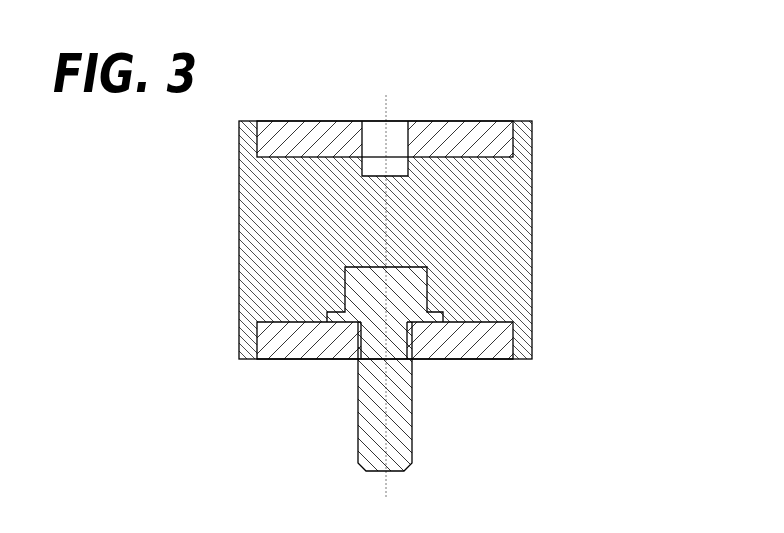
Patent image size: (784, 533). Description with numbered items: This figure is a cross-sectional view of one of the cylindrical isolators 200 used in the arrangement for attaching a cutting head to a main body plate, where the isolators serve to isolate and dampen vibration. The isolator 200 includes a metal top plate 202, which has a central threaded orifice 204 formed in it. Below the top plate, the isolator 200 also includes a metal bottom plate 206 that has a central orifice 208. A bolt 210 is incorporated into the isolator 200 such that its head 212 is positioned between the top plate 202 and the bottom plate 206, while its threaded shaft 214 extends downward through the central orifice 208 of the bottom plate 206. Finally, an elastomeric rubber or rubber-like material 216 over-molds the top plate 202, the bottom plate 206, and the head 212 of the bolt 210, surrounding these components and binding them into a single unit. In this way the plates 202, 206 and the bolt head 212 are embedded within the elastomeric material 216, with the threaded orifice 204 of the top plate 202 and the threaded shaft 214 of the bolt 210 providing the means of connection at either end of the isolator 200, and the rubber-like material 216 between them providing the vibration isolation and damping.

The isolator 200 is at (558, 200).
The metal top plate 202 is at (448, 135).
The central threaded orifice 204 is at (373, 135).
The metal bottom plate 206 is at (455, 342).
The central orifice 208 is at (348, 353).
The bolt 210 is at (428, 463).
The head 212 is at (363, 288).
The threaded shaft 214 is at (387, 418).
The elastomeric rubber or rubber-like material 216 is at (498, 235).